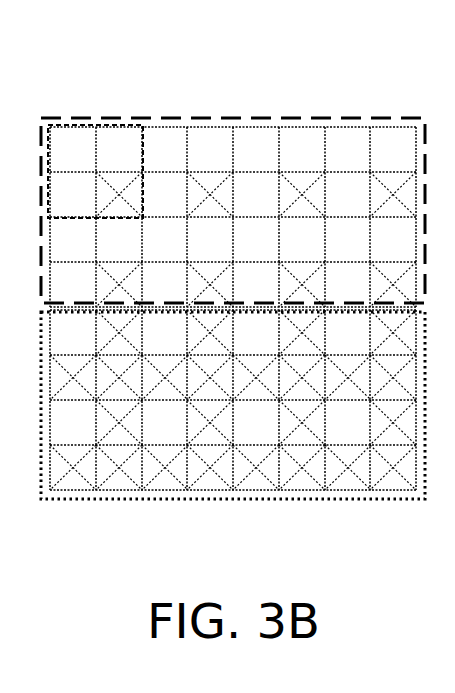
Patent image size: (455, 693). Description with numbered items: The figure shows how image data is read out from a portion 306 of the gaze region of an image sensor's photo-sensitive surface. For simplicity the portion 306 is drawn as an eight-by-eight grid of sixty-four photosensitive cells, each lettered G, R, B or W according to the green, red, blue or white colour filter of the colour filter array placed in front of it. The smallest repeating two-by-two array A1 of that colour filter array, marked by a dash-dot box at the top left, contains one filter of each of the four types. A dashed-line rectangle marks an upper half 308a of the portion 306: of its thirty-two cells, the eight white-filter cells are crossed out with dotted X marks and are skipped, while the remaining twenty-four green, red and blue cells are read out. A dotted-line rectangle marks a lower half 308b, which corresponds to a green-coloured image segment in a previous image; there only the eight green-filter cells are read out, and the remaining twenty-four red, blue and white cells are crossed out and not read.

The portion of the gaze region 306 is at (94, 37).
The upper half 308a is at (233, 117).
The lower half 308b is at (245, 502).
The smallest repeating 2×2 array A1 is at (98, 124).